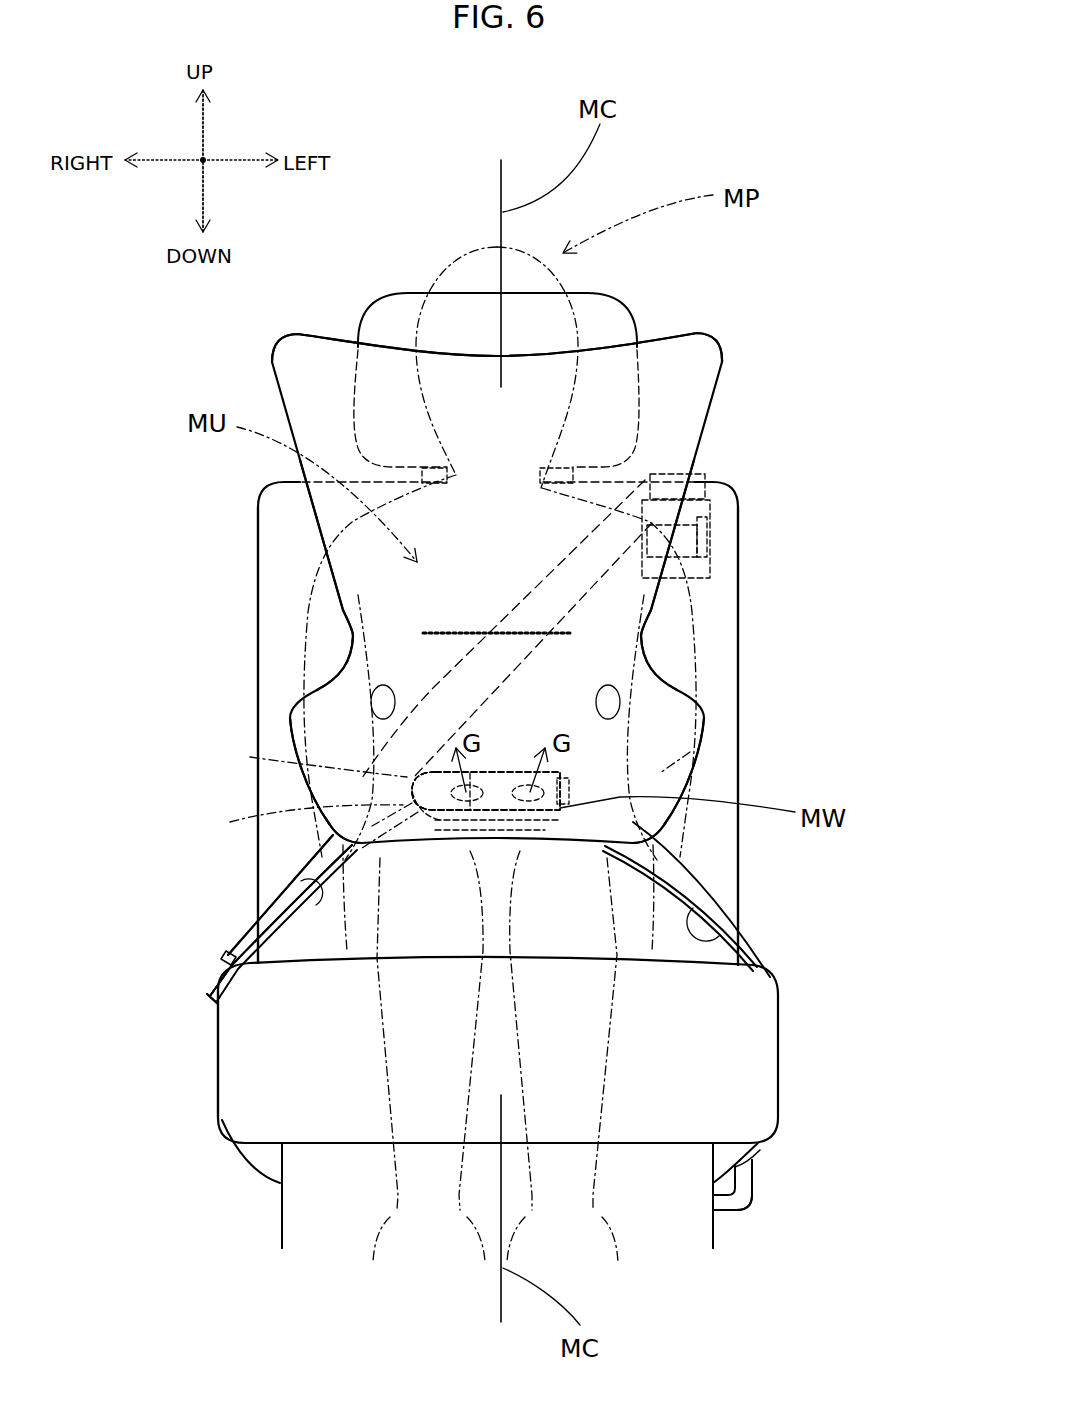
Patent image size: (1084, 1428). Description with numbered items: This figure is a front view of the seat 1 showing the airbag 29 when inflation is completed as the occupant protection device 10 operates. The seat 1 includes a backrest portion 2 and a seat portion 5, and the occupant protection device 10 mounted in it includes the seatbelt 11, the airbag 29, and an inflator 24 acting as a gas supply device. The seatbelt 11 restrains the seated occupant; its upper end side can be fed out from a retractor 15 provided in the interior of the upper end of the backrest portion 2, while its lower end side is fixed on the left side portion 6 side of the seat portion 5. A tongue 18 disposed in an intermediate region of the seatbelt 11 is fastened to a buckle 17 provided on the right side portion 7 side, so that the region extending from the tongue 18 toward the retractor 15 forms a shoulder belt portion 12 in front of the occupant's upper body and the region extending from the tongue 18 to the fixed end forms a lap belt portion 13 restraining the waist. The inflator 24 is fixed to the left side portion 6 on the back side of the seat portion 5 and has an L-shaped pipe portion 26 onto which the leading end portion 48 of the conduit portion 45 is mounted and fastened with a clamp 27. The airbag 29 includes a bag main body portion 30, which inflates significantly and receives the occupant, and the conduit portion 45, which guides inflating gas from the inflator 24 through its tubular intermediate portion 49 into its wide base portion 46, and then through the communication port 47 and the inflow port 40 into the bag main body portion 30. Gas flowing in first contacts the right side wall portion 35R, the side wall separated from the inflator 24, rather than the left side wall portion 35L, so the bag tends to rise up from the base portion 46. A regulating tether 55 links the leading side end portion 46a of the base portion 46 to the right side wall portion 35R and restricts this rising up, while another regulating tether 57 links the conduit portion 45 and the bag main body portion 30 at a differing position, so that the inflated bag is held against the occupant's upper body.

The seat 1 is at (498, 877).
The backrest portion 2 is at (238, 575).
The seat portion 5 is at (213, 1120).
The left side portion 6 is at (795, 1055).
The right side portion 7 is at (215, 1052).
The occupant protection device 10 is at (831, 1239).
The seatbelt 11 is at (142, 800).
The shoulder belt portion 12 is at (318, 850).
The lap belt portion 13 is at (310, 887).
The retractor 15 is at (722, 508).
The buckle 17 is at (226, 958).
The tongue 18 is at (222, 971).
The inflator 24 is at (893, 1115).
The pipe portion 26 is at (755, 1187).
The clamp 27 is at (760, 1147).
The airbag 29 is at (497, 571).
The bag main body portion 30 is at (723, 330).
The left side wall portion 35L is at (660, 608).
The right side wall portion 35R is at (340, 613).
The inflow port 40 is at (478, 800).
The conduit portion 45 is at (486, 791).
The base portion 46 is at (500, 775).
The leading side end portion 46a is at (434, 812).
The communication port 47 is at (553, 915).
The leading end portion 48 is at (753, 1160).
The intermediate portion 49 is at (678, 873).
The regulating tether 55 is at (327, 773).
The regulating tether 57 is at (623, 785).